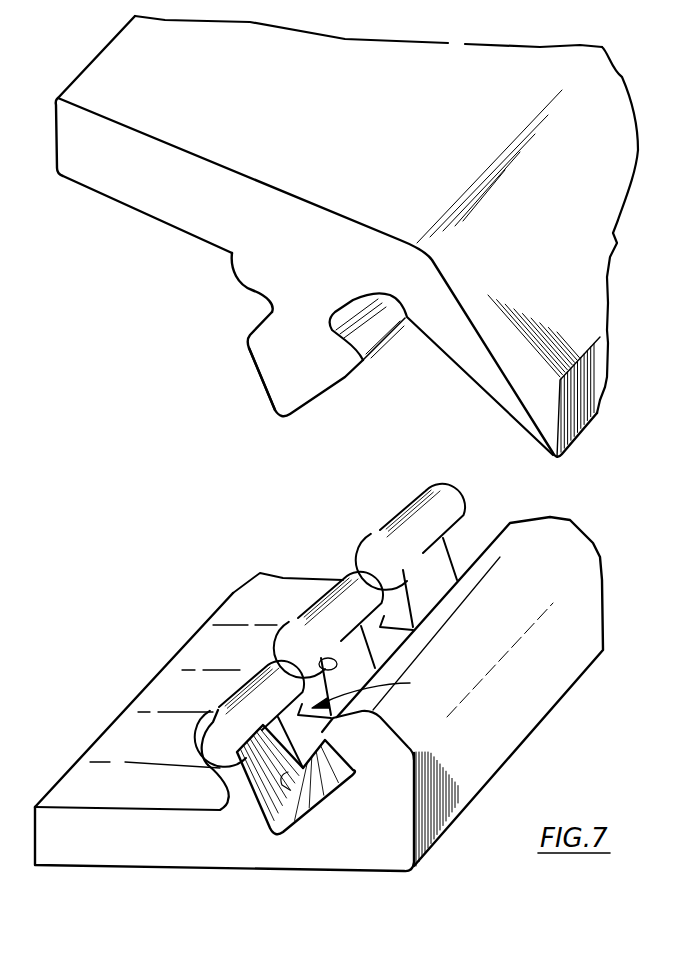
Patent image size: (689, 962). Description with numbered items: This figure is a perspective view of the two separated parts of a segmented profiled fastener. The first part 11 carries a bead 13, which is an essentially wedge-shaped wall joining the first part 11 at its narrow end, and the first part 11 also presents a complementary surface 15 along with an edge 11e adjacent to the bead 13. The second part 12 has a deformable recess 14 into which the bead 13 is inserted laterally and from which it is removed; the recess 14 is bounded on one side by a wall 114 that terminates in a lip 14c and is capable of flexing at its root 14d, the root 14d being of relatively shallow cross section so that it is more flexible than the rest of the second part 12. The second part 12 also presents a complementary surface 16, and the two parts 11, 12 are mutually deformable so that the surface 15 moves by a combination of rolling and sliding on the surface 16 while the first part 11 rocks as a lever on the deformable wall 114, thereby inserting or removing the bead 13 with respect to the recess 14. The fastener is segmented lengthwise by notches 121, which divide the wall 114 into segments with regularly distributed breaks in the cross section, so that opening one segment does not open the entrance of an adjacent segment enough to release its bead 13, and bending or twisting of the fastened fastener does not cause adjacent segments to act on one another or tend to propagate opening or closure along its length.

The first part 11 is at (132, 87).
The complementary surface 15 is at (233, 282).
The bead 13 is at (288, 370).
The edge of hook 11e is at (263, 388).
The second part 12 is at (227, 857).
The recess 14 is at (308, 822).
The lip 14c is at (280, 647).
The root 14d is at (240, 805).
The wall 114 is at (220, 770).
The complementary surface 16 is at (390, 508).
The notches 121 is at (384, 689).